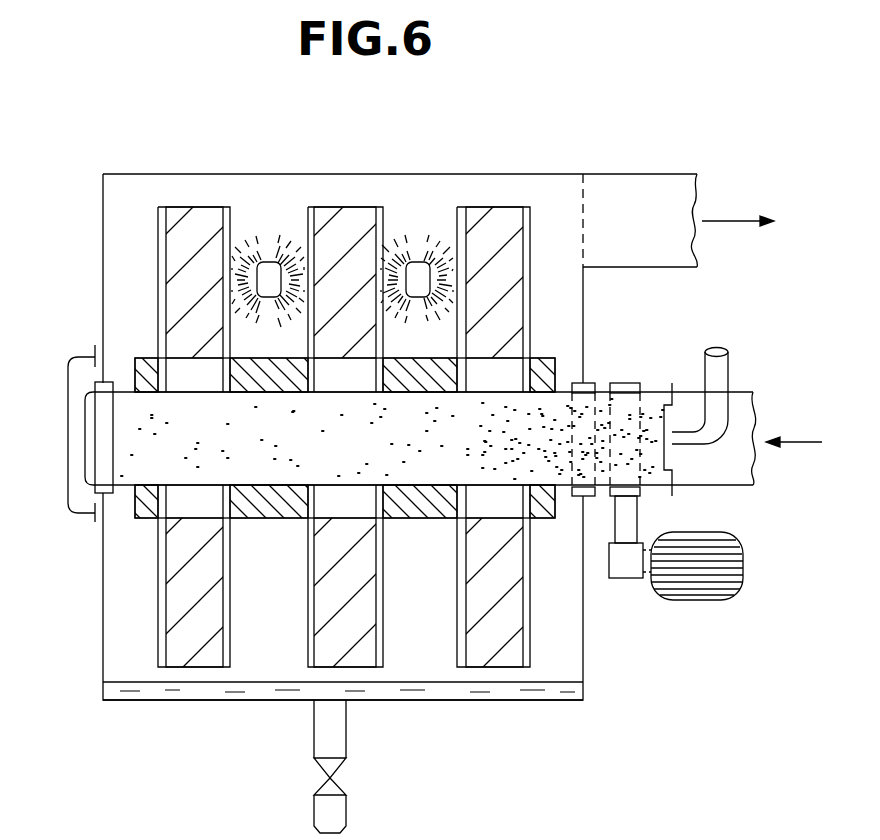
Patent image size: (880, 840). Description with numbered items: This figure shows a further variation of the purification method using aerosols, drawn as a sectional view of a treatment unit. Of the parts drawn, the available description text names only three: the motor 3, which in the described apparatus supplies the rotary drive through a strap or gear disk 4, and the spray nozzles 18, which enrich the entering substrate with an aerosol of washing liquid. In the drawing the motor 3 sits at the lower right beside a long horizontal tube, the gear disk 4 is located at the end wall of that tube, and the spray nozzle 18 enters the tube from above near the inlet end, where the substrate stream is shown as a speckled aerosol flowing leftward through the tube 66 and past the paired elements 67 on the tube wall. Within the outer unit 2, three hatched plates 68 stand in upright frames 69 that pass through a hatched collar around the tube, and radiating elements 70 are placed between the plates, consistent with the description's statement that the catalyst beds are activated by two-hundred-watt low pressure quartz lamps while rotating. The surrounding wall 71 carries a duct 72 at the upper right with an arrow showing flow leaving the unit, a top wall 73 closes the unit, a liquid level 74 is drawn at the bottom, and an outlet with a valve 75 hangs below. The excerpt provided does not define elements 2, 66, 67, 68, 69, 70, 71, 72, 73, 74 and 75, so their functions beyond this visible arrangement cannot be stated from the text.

The purification apparatus 2 is at (103, 650).
The motor 3 is at (745, 578).
The strap or gear disk 4 is at (672, 383).
The spray nozzles 18 is at (728, 367).
The tube 66 is at (753, 392).
The electrodes 67 is at (600, 388).
The electrode plates 68 is at (337, 222).
The frames 69 is at (158, 207).
The lamps 70 is at (268, 246).
The housing wall 71 is at (558, 200).
The outlet duct 72 is at (625, 174).
The cover 73 is at (338, 174).
The liquid 74 is at (567, 692).
The drain valve 75 is at (314, 812).